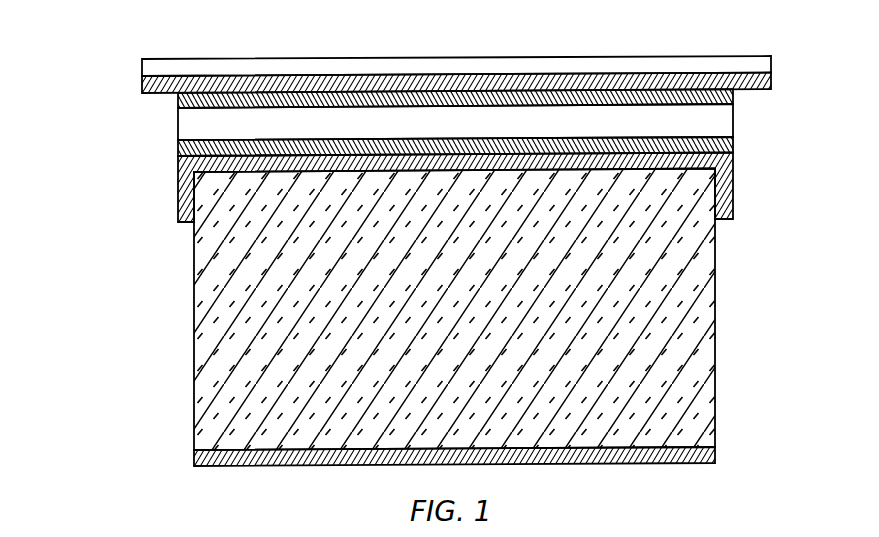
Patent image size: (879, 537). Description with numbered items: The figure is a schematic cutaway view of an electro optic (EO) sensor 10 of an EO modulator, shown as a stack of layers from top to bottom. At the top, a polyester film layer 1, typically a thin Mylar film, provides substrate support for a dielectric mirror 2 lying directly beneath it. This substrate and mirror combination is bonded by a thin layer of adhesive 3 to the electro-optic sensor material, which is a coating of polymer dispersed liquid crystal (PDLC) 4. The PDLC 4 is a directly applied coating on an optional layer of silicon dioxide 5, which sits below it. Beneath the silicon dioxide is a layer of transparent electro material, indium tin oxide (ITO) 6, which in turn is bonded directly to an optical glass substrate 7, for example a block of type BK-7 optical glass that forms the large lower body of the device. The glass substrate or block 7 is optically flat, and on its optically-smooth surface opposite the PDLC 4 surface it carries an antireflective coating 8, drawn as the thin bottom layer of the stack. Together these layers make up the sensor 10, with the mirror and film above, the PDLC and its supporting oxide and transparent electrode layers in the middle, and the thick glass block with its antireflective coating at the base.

The electro optic sensor 10 is at (421, 245).
The polyester film layer 1 is at (772, 66).
The dielectric mirror 2 is at (771, 85).
The layer of adhesive 3 is at (733, 96).
The polymer dispersed liquid crystal coating 4 is at (733, 121).
The layer of silicon dioxide 5 is at (733, 144).
The indium tin oxide layer 6 is at (733, 184).
The optical glass substrate 7 is at (715, 331).
The antireflective coating 8 is at (715, 455).